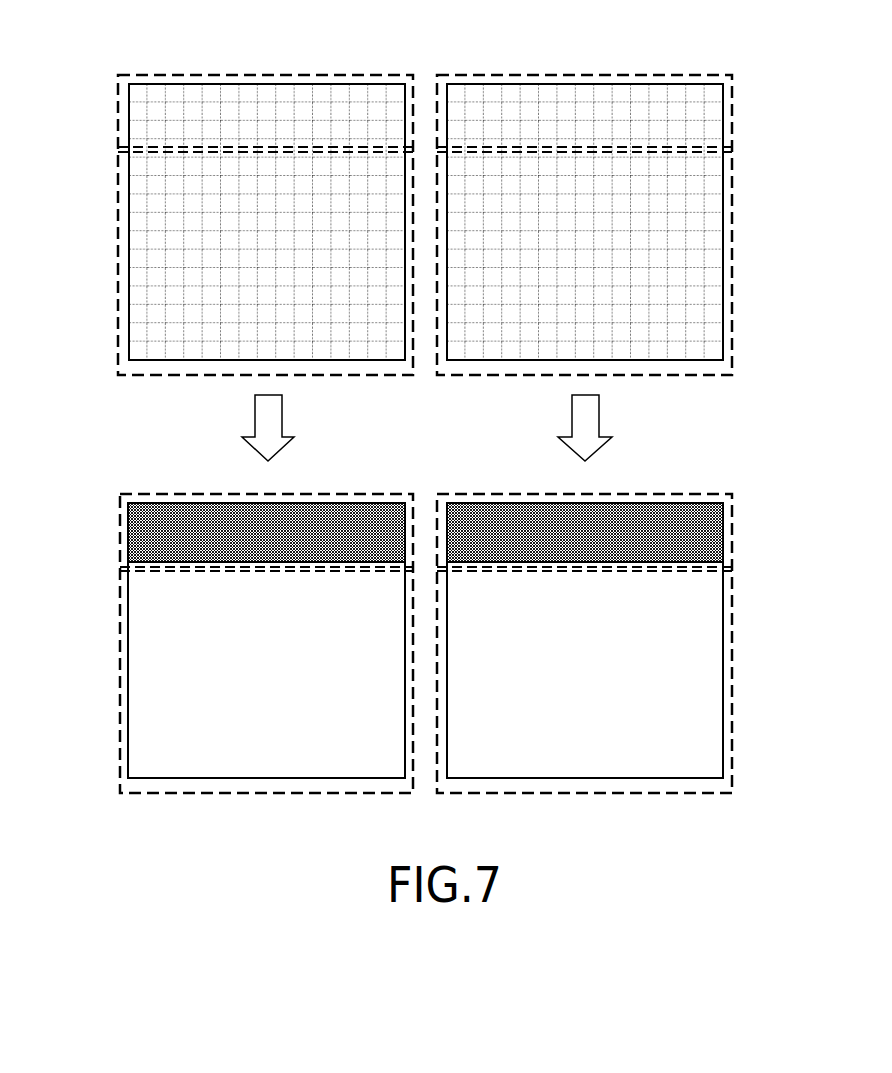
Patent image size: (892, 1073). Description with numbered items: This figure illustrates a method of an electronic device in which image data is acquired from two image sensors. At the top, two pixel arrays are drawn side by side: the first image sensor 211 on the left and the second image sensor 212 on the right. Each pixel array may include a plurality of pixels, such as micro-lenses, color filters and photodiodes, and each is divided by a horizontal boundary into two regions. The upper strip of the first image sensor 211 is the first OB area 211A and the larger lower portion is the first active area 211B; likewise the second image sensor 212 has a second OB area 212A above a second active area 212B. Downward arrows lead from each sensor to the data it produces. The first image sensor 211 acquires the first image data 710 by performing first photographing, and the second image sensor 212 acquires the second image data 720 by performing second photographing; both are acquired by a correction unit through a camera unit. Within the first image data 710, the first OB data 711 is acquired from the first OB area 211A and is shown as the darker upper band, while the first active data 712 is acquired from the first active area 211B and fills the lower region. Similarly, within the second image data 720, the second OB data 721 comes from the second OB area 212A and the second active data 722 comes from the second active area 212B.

The first image sensor 211 is at (353, 52).
The first OB area 211A is at (118, 113).
The first active area 211B is at (118, 190).
The second image sensor 212 is at (688, 52).
The second OB area 212A is at (732, 113).
The second active area 212B is at (732, 190).
The first image data 710 is at (216, 643).
The first OB data 711 is at (120, 530).
The first active data 712 is at (241, 672).
The second image data 720 is at (633, 643).
The second OB data 721 is at (732, 530).
The second active data 722 is at (609, 672).